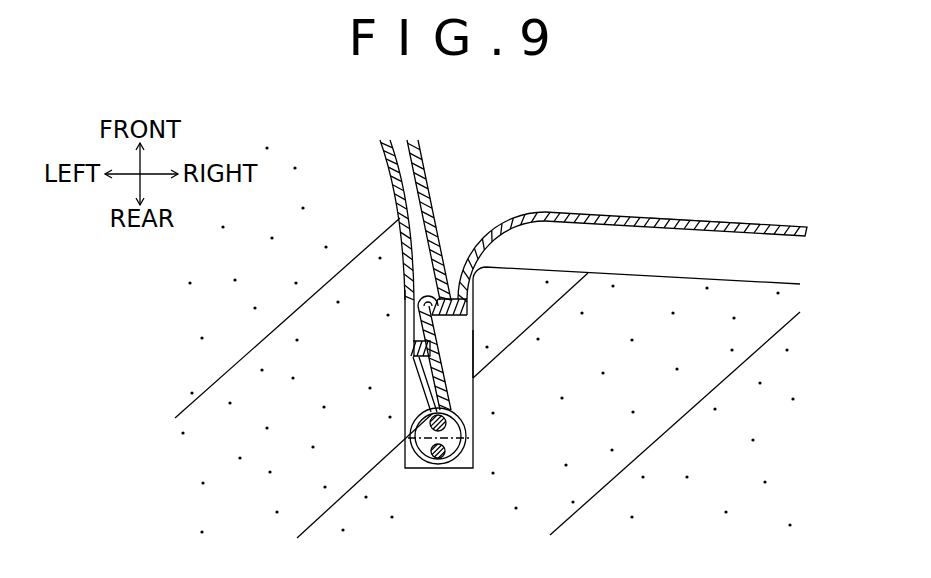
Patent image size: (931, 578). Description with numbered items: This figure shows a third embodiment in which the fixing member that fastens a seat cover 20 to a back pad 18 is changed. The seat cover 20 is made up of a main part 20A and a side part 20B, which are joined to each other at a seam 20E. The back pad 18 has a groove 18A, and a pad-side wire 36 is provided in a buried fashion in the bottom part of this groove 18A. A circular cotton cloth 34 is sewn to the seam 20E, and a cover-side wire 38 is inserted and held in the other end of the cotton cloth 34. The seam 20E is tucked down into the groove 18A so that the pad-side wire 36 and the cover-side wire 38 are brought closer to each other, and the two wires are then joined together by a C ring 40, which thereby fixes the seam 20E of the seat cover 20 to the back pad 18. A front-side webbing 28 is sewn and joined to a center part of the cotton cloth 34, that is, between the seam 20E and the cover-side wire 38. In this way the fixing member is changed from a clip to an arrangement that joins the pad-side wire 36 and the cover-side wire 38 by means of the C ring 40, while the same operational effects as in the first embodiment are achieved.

The back pad 18 is at (742, 278).
The groove 18A is at (466, 344).
The seat cover 20 is at (618, 214).
The main part 20A is at (682, 215).
The side part 20B is at (427, 182).
The seam 20E is at (456, 303).
The front-side webbing 28 is at (413, 245).
The cotton cloth 34 is at (445, 387).
The pad-side wire 36 is at (437, 459).
The cover-side wire 38 is at (410, 430).
The C ring 40 is at (468, 428).